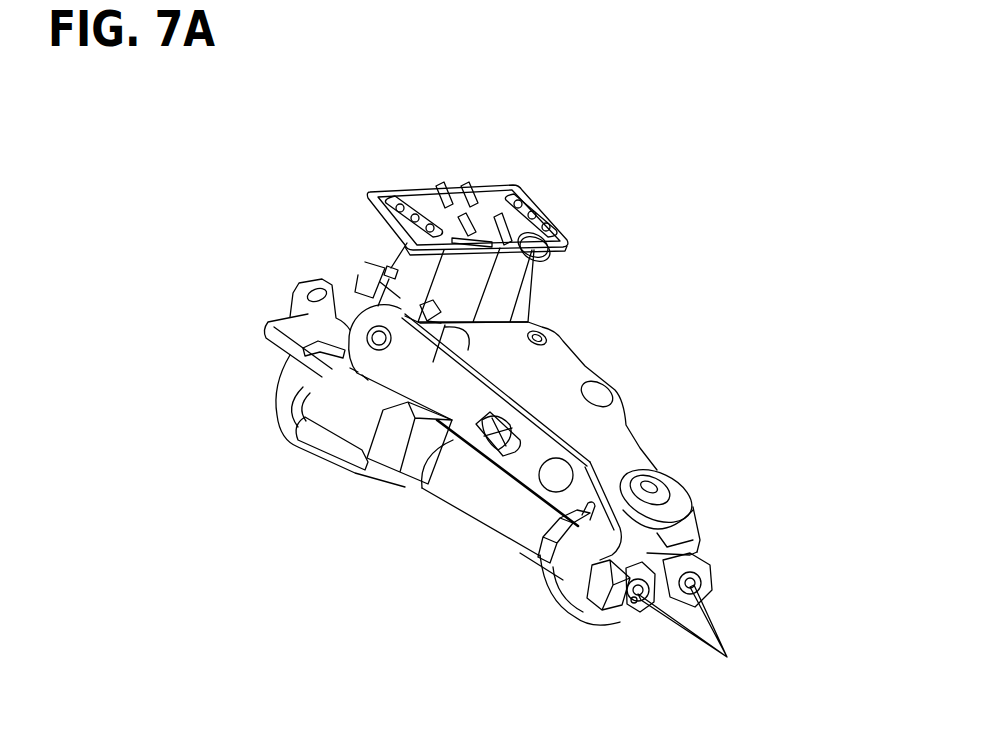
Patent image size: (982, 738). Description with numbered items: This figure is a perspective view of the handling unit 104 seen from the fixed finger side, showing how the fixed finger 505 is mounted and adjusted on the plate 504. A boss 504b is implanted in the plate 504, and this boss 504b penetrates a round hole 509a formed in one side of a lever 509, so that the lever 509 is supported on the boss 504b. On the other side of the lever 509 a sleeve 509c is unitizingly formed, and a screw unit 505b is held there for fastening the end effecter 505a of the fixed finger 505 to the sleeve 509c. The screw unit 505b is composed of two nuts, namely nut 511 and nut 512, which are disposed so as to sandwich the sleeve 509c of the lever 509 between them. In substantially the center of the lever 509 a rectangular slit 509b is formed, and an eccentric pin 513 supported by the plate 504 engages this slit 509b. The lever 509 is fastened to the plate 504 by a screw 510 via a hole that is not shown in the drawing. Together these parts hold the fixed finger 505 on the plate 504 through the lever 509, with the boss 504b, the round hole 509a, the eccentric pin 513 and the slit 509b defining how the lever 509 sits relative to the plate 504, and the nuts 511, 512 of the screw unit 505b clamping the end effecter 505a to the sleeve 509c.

The print head / carriage assembly 104 is at (512, 160).
The plate 504 is at (527, 325).
The boss 504b is at (377, 330).
The lever 509 is at (535, 450).
The round hole 509a is at (373, 330).
The rectangular slit 509b is at (485, 410).
The sleeve 509c is at (580, 577).
The screw 510 is at (557, 477).
The nut 511 is at (547, 565).
The nut 512 is at (605, 617).
The eccentric pin 513 is at (432, 490).
The fixed finger 505 is at (495, 523).
The end effecter 505a is at (727, 662).
The screw unit 505b is at (634, 612).